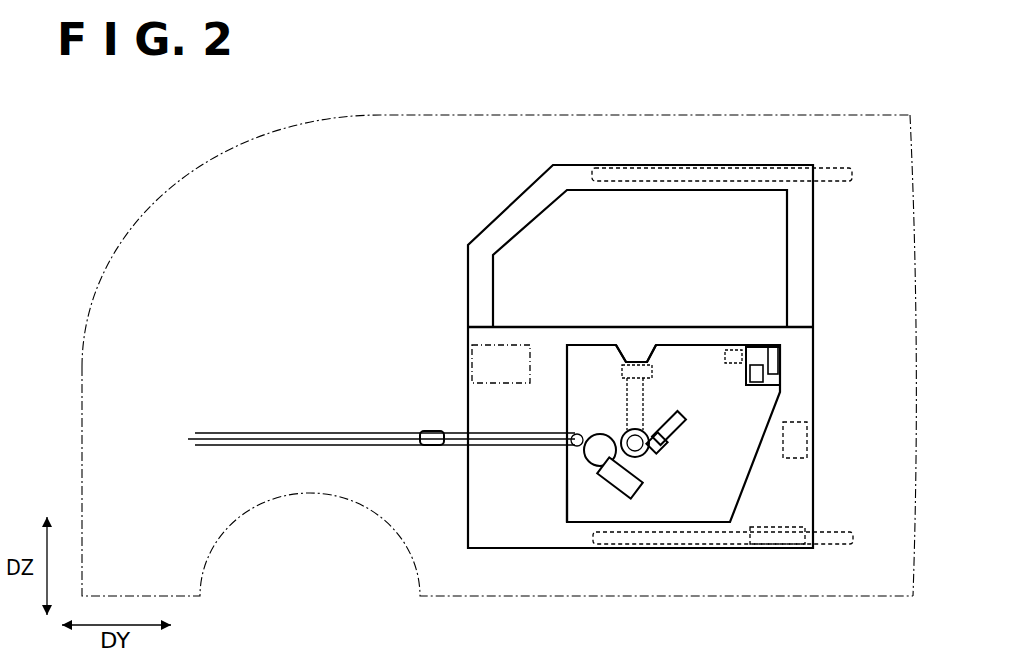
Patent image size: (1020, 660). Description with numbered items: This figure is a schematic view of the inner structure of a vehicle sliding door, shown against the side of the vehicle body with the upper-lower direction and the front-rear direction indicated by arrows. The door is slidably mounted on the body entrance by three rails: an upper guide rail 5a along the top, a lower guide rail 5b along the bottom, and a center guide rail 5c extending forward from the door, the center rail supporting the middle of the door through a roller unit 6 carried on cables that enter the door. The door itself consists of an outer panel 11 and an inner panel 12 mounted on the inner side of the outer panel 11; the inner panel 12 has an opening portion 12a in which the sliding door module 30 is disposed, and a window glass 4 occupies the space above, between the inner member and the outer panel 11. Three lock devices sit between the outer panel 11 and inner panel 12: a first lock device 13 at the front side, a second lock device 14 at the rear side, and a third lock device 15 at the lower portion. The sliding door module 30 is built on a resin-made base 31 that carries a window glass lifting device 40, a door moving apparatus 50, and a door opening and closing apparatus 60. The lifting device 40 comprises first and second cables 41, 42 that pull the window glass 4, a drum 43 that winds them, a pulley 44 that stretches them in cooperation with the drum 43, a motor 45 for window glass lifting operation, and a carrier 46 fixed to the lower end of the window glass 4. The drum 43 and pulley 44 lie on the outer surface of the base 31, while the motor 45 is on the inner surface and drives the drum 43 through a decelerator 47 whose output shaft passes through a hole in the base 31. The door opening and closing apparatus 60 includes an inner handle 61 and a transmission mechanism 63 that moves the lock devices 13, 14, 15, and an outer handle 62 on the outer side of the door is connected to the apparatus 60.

The window glass 4 is at (545, 232).
The upper guide rail 5a is at (841, 168).
The lower guide rail 5b is at (841, 548).
The center guide rail 5c is at (215, 432).
The roller unit 6 is at (430, 431).
The outer panel 11 is at (468, 296).
The inner panel 12 is at (470, 493).
The opening portion 12a is at (572, 498).
The first lock device 13 is at (808, 441).
The second lock device 14 is at (472, 365).
The third lock device 15 is at (790, 528).
The sliding door module 30 is at (597, 343).
The base 31 is at (568, 472).
The window glass lifting device 40 is at (620, 411).
The first cable 41 is at (624, 410).
The second cable 42 is at (646, 394).
The drum 43 is at (663, 455).
The pulley 44 is at (632, 346).
The motor for window glass lifting operation 45 is at (688, 428).
The carrier 46 is at (655, 370).
The decelerator 47 is at (638, 458).
The door moving apparatus 50 is at (619, 505).
The door opening and closing apparatus 60 is at (787, 357).
The inner handle 61 is at (782, 368).
The outer handle 62 is at (738, 348).
The transmission mechanism 63 is at (781, 378).